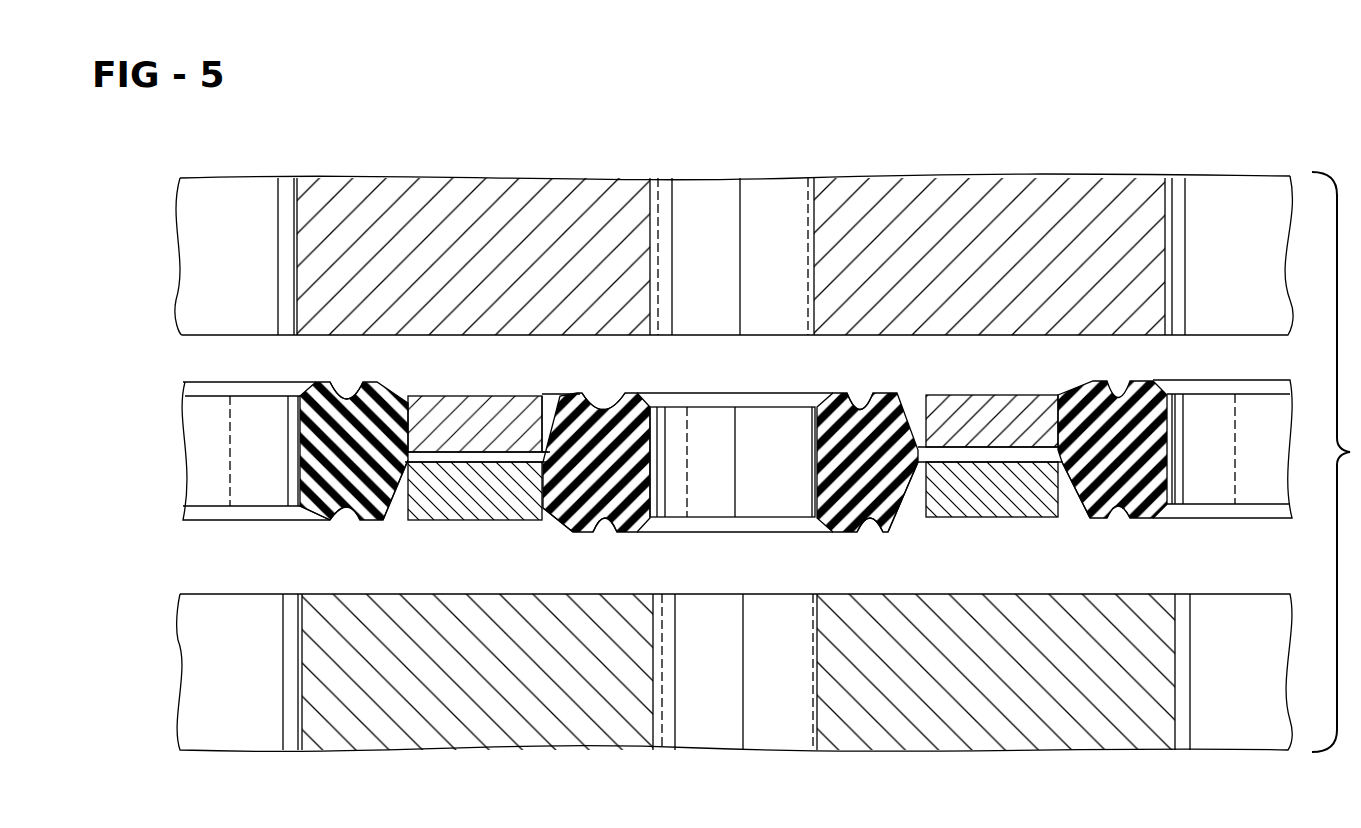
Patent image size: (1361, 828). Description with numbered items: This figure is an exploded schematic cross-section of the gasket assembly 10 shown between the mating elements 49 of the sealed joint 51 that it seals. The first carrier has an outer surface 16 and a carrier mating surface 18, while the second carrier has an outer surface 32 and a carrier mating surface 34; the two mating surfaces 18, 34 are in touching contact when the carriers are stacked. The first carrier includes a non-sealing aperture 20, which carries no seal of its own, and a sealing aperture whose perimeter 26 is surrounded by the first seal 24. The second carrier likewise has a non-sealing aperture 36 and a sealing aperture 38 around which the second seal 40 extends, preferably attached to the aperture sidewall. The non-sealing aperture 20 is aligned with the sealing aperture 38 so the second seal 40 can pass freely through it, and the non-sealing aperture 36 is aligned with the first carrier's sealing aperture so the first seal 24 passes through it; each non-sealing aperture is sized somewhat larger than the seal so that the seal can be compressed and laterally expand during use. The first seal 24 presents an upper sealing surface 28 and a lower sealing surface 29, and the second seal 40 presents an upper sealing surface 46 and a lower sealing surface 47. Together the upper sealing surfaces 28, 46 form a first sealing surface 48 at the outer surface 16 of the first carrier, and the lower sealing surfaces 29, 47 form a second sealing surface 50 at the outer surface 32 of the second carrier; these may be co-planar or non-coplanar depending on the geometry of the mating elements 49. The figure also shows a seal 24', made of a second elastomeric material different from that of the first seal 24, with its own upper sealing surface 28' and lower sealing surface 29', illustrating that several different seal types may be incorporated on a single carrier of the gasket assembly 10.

The gasket assembly 10 is at (158, 463).
The outer surface 16 is at (495, 386).
The carrier mating surface 18 is at (435, 440).
The non-sealing aperture 20 is at (557, 397).
The first seal 24 is at (405, 513).
The seal 24' is at (1174, 519).
The perimeter 26 is at (925, 518).
The upper sealing surface 28 is at (340, 432).
The upper sealing surface 28' is at (1133, 431).
The lower sealing surface 29 is at (312, 539).
The lower sealing surface 29' is at (1092, 526).
The outer surface 32 is at (462, 521).
The carrier mating surface 34 is at (987, 462).
The non-sealing aperture 36 is at (1067, 510).
The sealing aperture 38 is at (750, 503).
The second seal 40 is at (639, 402).
The upper sealing surface 46 is at (840, 393).
The lower sealing surface 47 is at (577, 532).
The first sealing surface 48 is at (370, 392).
The mating elements 49 is at (542, 198).
The second sealing surface 50 is at (370, 522).
The sealed joint 51 is at (1029, 118).